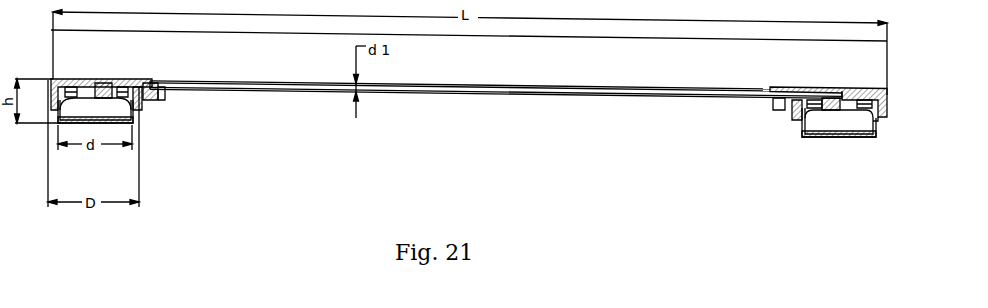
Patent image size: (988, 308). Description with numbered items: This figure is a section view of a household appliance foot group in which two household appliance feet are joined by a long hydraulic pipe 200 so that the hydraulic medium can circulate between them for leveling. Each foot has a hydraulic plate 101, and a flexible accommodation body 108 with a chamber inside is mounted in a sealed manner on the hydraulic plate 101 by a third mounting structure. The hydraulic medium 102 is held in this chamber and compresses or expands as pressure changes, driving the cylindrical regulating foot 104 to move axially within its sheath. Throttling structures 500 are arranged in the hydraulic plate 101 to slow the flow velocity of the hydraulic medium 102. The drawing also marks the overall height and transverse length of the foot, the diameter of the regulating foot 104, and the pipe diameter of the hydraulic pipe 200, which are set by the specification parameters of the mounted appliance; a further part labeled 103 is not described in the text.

The throttling structure 500 is at (112, 83).
The hydraulic pipe 200 is at (428, 84).
The hydraulic plate 101 is at (812, 88).
The hydraulic medium 102 is at (840, 125).
The side wall 103 is at (879, 121).
The regulating foot 104 is at (876, 137).
The flexible accommodation body 108 is at (810, 112).